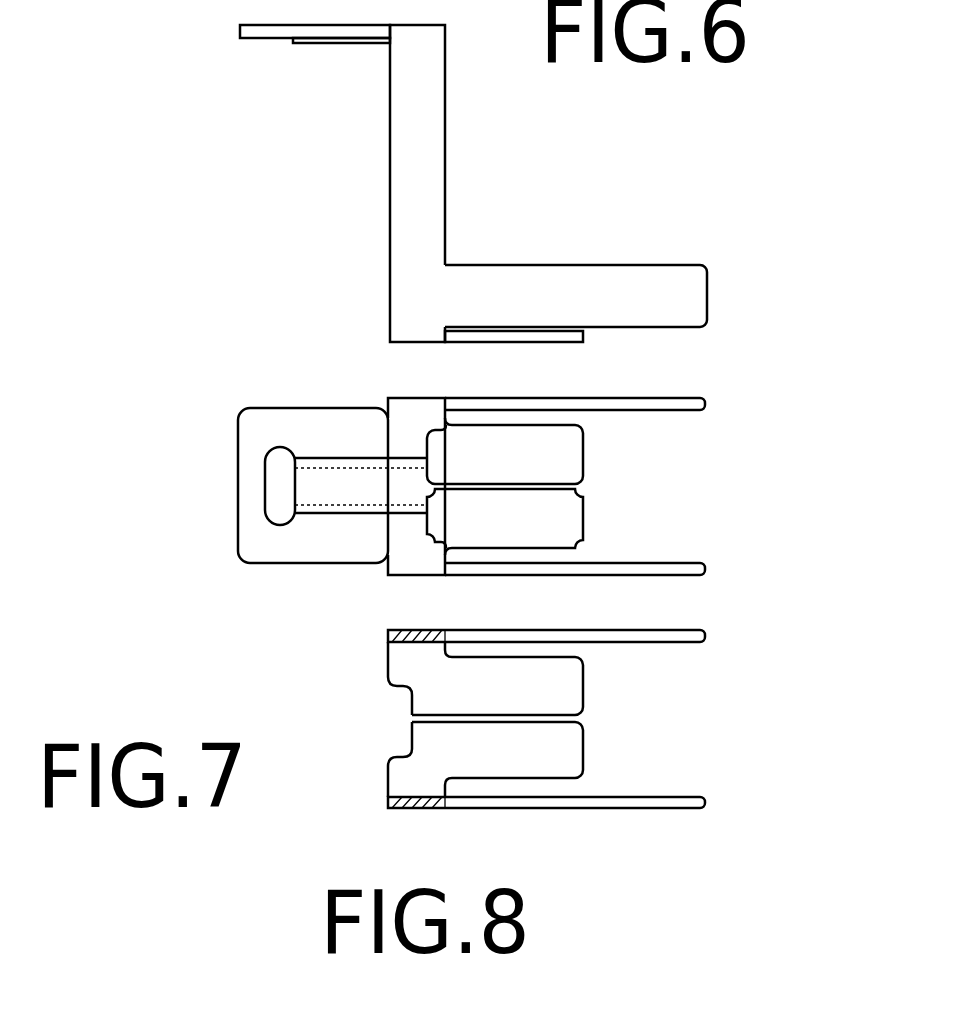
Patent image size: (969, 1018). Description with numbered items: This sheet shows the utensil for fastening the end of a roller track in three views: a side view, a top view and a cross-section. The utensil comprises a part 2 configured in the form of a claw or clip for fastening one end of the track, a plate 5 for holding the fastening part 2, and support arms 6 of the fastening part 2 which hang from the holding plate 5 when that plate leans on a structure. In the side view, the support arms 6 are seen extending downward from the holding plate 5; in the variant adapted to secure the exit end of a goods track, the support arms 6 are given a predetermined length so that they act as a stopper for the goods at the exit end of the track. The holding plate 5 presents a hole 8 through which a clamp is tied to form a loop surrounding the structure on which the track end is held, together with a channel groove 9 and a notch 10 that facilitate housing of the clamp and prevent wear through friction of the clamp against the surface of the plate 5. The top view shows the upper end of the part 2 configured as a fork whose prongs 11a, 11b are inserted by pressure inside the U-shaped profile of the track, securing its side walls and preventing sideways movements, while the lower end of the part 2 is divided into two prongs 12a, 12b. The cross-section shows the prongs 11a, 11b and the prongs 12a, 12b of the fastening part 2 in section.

In FIG. 6, the fastening part 2 is at (730, 326).
In FIG. 6, the holding plate 5 is at (265, 32).
In FIG. 7, the holding plate 5 is at (312, 432).
In FIG. 6, the support arms 6 is at (410, 173).
In FIG. 7, the hole 8 is at (263, 480).
In FIG. 7, the channel groove 9 is at (325, 492).
In FIG. 7, the notch 10 is at (427, 532).
In FIG. 7, the prong of the fork 11a is at (650, 403).
In FIG. 8, the prong of the fork 11a is at (645, 631).
In FIG. 6, the prong of the fork 11b is at (565, 295).
In FIG. 7, the prong of the fork 11b is at (665, 570).
In FIG. 8, the prong of the fork 11b is at (705, 798).
In FIG. 7, the prong of the lower end 12a is at (565, 465).
In FIG. 8, the prong of the lower end 12a is at (557, 683).
In FIG. 6, the prong of the lower end 12b is at (585, 340).
In FIG. 7, the prong of the lower end 12b is at (570, 528).
In FIG. 8, the prong of the lower end 12b is at (557, 750).